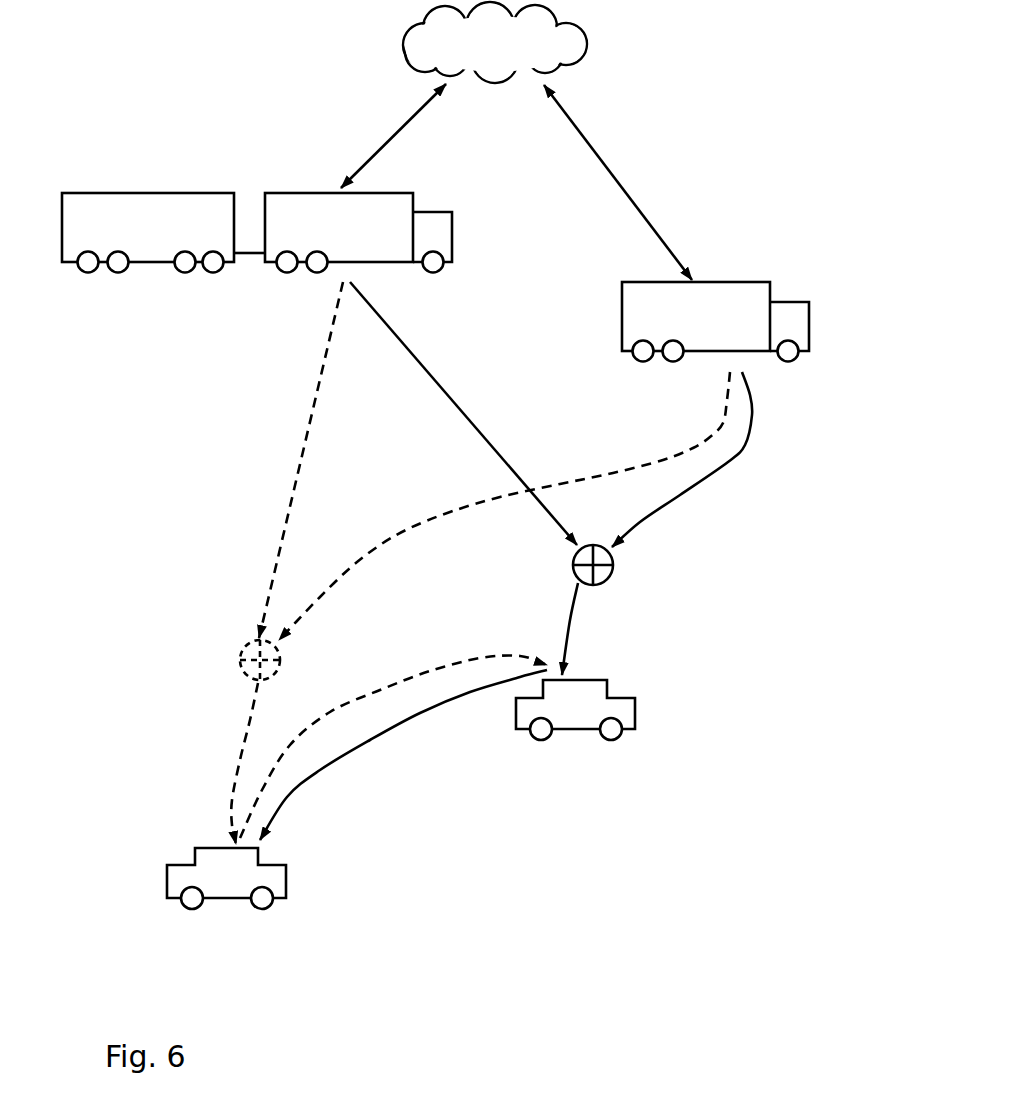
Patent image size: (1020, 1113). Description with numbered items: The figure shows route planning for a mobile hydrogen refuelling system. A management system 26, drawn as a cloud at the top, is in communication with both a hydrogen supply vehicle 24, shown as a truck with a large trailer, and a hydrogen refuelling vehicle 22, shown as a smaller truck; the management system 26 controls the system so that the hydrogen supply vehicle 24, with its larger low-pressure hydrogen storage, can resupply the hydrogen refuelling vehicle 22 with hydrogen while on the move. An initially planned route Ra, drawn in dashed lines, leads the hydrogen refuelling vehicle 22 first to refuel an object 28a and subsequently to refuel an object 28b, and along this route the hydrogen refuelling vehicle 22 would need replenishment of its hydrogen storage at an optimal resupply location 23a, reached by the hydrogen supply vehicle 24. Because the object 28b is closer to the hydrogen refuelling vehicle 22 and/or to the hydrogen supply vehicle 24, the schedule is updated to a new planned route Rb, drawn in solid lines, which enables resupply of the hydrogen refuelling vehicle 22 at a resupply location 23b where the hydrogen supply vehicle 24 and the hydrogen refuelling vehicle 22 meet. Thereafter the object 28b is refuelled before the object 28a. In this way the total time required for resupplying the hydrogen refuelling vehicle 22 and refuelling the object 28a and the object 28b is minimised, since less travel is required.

The management system 26 is at (495, 42).
The hydrogen supply vehicle 24 is at (257, 233).
The hydrogen refuelling vehicle 22 is at (715, 322).
The optimal resupply location 23a is at (240, 655).
The resupply location 23b is at (592, 585).
The object 28a is at (227, 870).
The object 28b is at (575, 727).
The initially planned route Ra is at (608, 470).
The new planned route Rb is at (723, 473).